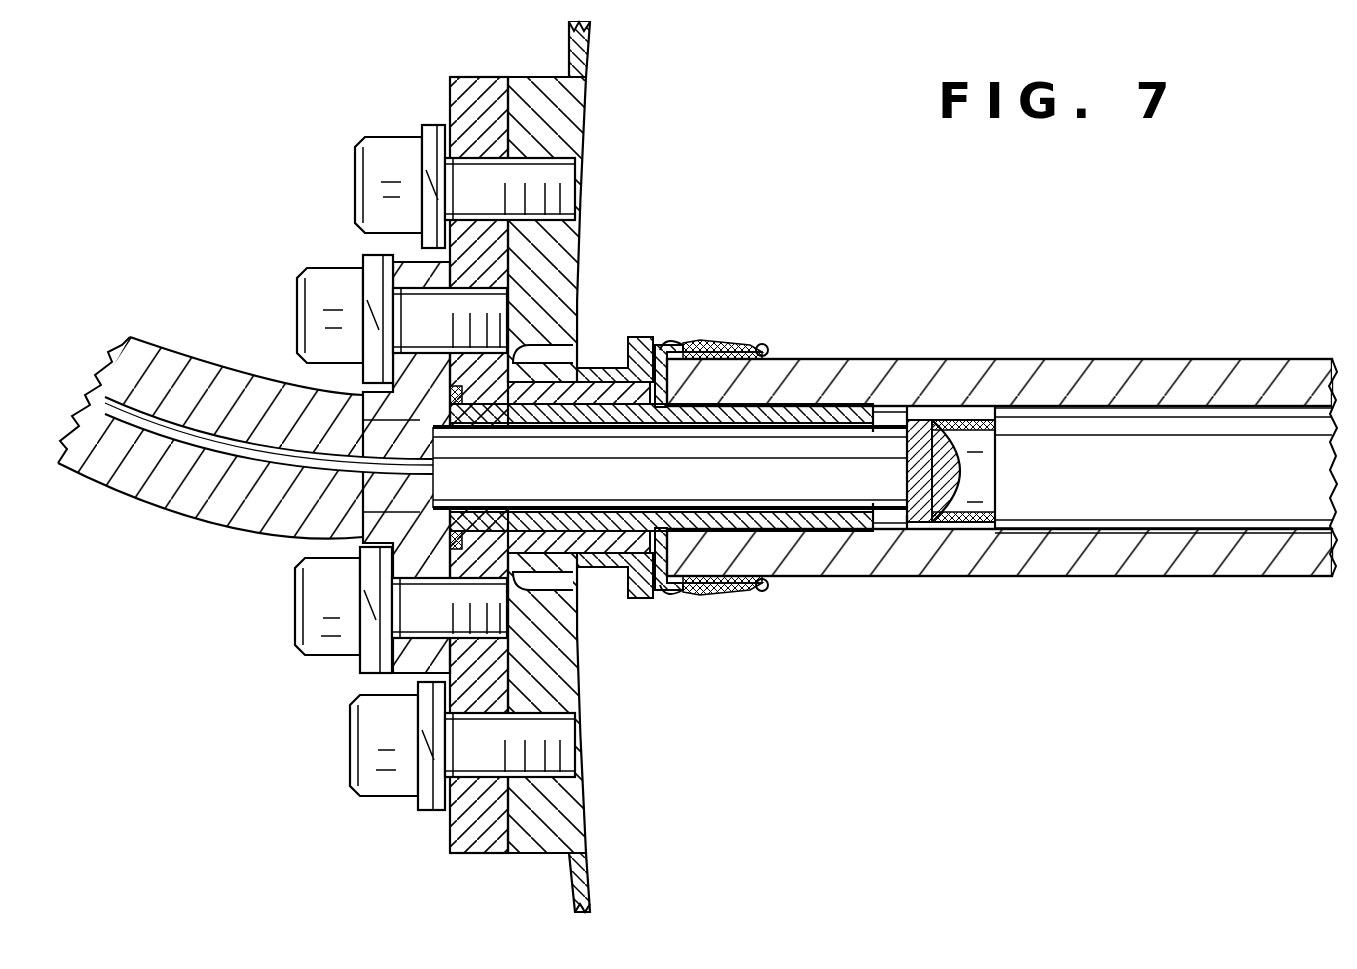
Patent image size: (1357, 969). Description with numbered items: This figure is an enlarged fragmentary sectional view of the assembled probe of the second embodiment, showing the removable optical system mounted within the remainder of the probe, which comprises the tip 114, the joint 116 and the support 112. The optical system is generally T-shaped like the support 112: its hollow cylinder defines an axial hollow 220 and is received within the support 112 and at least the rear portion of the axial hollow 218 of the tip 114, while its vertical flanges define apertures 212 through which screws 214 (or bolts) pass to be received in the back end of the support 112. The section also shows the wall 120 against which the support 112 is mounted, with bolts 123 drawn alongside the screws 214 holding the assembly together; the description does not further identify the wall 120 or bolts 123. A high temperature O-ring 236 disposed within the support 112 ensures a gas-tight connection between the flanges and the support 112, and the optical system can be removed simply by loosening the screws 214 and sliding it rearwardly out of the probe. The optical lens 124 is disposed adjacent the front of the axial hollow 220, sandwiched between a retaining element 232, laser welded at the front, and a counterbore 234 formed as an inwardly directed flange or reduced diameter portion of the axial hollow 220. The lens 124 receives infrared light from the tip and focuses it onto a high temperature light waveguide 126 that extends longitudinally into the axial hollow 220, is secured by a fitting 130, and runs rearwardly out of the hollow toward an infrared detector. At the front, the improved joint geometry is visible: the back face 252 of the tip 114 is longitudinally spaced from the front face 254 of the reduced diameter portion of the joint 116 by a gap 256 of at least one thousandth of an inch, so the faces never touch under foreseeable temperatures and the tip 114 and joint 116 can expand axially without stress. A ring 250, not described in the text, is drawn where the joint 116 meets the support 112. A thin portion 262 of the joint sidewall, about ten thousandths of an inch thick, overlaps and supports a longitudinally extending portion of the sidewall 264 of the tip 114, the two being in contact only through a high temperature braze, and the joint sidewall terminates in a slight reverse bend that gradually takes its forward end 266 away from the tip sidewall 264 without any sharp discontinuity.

The support 112 is at (543, 610).
The tip 114 is at (1040, 583).
The joint 116 is at (648, 610).
The wall 120 is at (478, 152).
The bolt 123 is at (352, 188).
The optical lens 124 is at (935, 440).
The high temperature light waveguide 126 is at (105, 398).
The fitting 130 is at (175, 350).
The apertures 212 is at (420, 277).
The screws 214 is at (300, 328).
The axial hollow of the tip 218 is at (1158, 502).
The axial hollow of the optical system cylinder 220 is at (620, 495).
The retaining element 232 is at (996, 424).
The counterbore 234 is at (880, 402).
The high temperature O-ring 236 is at (340, 392).
The clamp ring 250 is at (585, 370).
The back face of the tip 252 is at (700, 353).
The front face of the joint 254 is at (641, 345).
The gap 256 is at (670, 592).
The overlapping and supporting sidewall portion 262 is at (750, 348).
The tip sidewall 264 is at (1187, 362).
The forward end of the joint sidewall 266 is at (764, 341).